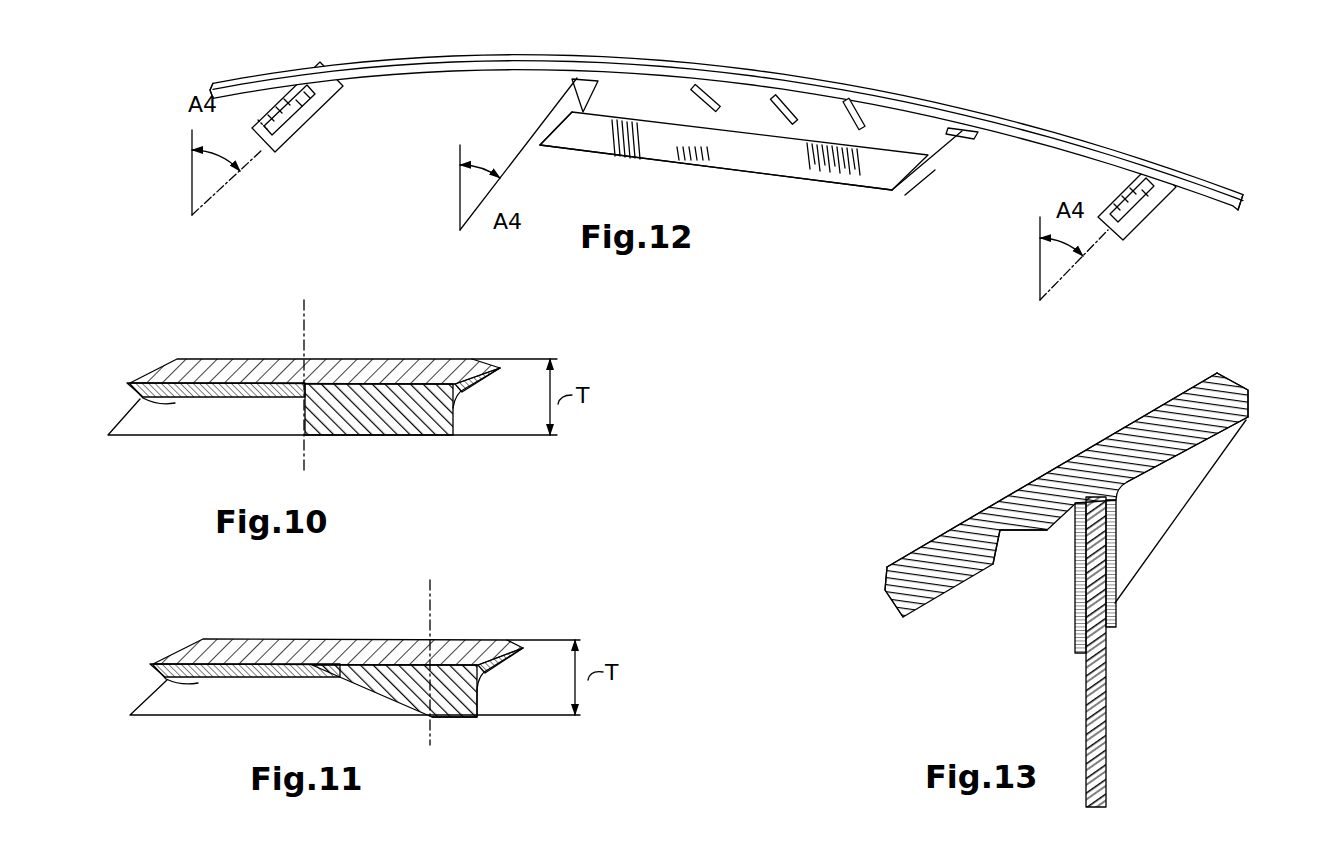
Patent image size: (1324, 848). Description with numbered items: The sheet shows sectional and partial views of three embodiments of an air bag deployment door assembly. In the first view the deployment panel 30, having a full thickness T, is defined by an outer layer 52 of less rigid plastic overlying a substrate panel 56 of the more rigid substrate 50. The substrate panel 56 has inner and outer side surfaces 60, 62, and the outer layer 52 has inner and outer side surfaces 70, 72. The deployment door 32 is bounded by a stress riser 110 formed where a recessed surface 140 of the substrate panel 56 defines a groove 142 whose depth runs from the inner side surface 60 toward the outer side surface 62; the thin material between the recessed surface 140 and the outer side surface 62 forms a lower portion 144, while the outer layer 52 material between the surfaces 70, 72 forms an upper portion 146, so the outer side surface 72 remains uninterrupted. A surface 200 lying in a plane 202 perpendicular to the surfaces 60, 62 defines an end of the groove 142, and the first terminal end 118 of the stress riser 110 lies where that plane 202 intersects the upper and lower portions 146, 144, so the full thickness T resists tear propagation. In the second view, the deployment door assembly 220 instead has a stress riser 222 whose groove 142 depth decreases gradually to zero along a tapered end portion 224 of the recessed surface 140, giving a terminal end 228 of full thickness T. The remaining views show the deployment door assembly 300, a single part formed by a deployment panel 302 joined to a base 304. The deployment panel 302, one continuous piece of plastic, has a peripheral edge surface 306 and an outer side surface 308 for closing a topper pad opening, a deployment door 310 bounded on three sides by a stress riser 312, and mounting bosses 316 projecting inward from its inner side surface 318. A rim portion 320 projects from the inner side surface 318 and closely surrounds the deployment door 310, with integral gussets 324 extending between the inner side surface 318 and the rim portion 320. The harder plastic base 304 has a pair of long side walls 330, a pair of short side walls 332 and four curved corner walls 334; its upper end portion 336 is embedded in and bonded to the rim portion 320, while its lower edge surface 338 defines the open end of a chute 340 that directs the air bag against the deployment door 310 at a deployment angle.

In FIG. 10, the deployment panel 30 is at (373, 347).
In FIG. 11, the deployment panel 30 is at (331, 632).
In FIG. 10, the deployment door 32 is at (390, 360).
In FIG. 11, the deployment door 32 is at (452, 638).
In FIG. 10, the substrate 50 is at (345, 438).
In FIG. 11, the substrate 50 is at (448, 721).
In FIG. 10, the outer layer 52 is at (480, 358).
In FIG. 11, the outer layer 52 is at (511, 640).
In FIG. 10, the substrate panel 56 is at (393, 410).
In FIG. 11, the substrate panel 56 is at (462, 718).
In FIG. 10, the inner side surface 60 is at (410, 440).
In FIG. 11, the inner side surface 60 is at (474, 720).
In FIG. 10, the outer side surface 62 is at (460, 376).
In FIG. 11, the outer side surface 62 is at (492, 656).
In FIG. 10, the inner side surface 70 is at (456, 403).
In FIG. 11, the inner side surface 70 is at (477, 688).
In FIG. 10, the outer side surface 72 is at (440, 359).
In FIG. 11, the outer side surface 72 is at (487, 638).
In FIG. 10, the stress riser 110 is at (233, 357).
In FIG. 10, the first terminal end 118 is at (308, 380).
In FIG. 10, the recessed surface 140 is at (150, 423).
In FIG. 11, the recessed surface 140 is at (172, 698).
In FIG. 10, the groove 142 is at (226, 418).
In FIG. 11, the groove 142 is at (208, 703).
In FIG. 10, the lower portion 144 is at (168, 403).
In FIG. 11, the lower portion 144 is at (165, 686).
In FIG. 10, the upper portion 146 is at (165, 370).
In FIG. 11, the upper portion 146 is at (190, 648).
In FIG. 10, the surface 200 is at (310, 418).
In FIG. 10, the plane 202 is at (305, 312).
In FIG. 11, the deployment door assembly 220 is at (118, 630).
In FIG. 11, the stress riser 222 is at (232, 643).
In FIG. 11, the tapered end portion 224 is at (344, 681).
In FIG. 11, the terminal end 228 is at (443, 628).
In FIG. 12, the deployment door assembly 300 is at (390, 18).
In FIG. 13, the deployment door assembly 300 is at (960, 466).
In FIG. 12, the deployment panel 302 is at (445, 54).
In FIG. 13, the deployment panel 302 is at (1165, 400).
In FIG. 12, the base 304 is at (622, 158).
In FIG. 13, the base 304 is at (1108, 689).
In FIG. 12, the peripheral edge surface 306 is at (213, 84).
In FIG. 12, the outer side surface 308 is at (388, 61).
In FIG. 13, the outer side surface 308 is at (1192, 390).
In FIG. 12, the deployment door 310 is at (760, 72).
In FIG. 13, the deployment door 310 is at (927, 545).
In FIG. 13, the stress riser 312 is at (980, 500).
In FIG. 12, the mounting bosses 316 is at (283, 150).
In FIG. 12, the inner side surface 318 is at (1056, 153).
In FIG. 13, the inner side surface 318 is at (1227, 430).
In FIG. 12, the rim portion 320 is at (897, 136).
In FIG. 13, the rim portion 320 is at (1117, 541).
In FIG. 12, the gussets 324 is at (575, 80).
In FIG. 13, the gussets 324 is at (1158, 478).
In FIG. 12, the long side walls 330 is at (566, 112).
In FIG. 13, the long side walls 330 is at (1094, 720).
In FIG. 12, the short side walls 332 is at (672, 143).
In FIG. 12, the curved corner walls 334 is at (568, 136).
In FIG. 13, the upper end portion 336 is at (1117, 512).
In FIG. 12, the lower edge surface 338 is at (762, 180).
In FIG. 13, the lower edge surface 338 is at (1099, 802).
In FIG. 13, the chute 340 is at (1034, 718).